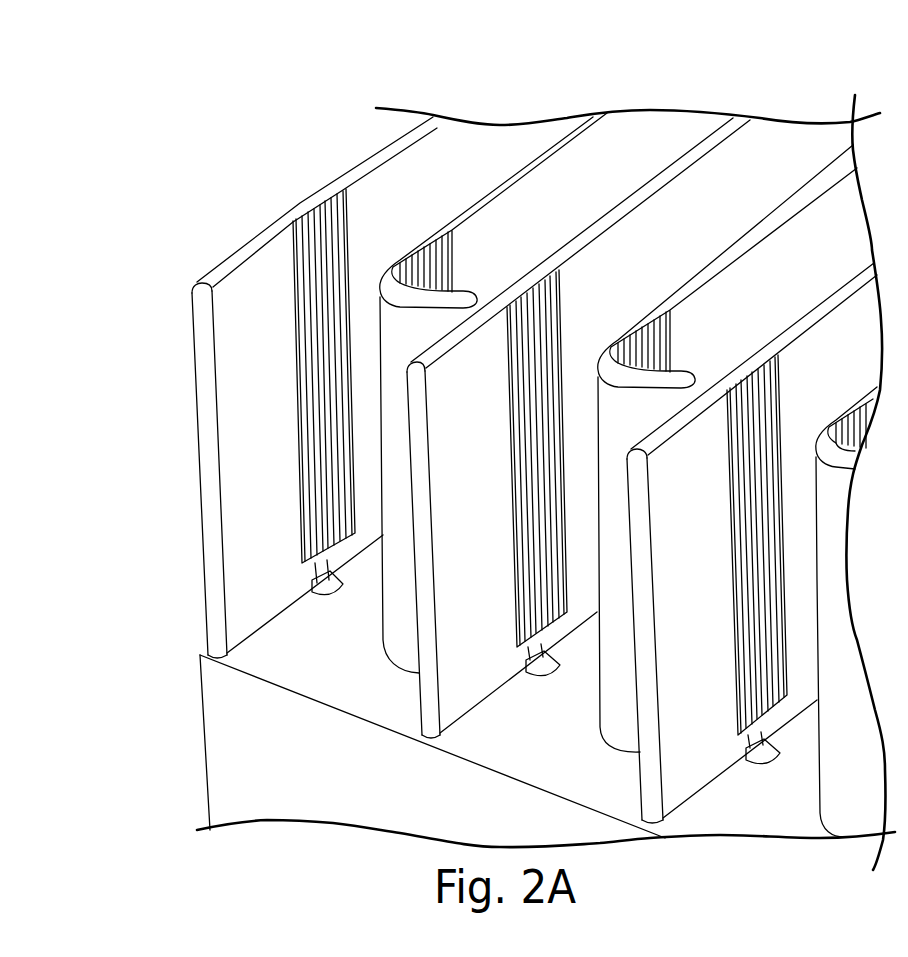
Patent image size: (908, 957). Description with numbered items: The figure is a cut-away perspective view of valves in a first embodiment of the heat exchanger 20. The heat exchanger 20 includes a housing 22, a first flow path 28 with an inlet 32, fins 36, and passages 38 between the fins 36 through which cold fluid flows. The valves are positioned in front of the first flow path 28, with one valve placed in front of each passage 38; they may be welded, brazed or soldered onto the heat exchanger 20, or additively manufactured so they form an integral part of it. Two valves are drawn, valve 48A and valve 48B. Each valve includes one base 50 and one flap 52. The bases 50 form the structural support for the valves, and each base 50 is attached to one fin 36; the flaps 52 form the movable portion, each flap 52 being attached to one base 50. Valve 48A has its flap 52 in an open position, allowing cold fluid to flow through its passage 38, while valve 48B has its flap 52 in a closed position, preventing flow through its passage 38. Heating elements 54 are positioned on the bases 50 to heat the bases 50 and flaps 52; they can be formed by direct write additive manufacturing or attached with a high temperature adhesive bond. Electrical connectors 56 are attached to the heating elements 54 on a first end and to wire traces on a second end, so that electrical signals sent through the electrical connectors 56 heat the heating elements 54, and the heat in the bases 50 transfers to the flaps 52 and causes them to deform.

The heat exchanger 20 is at (139, 166).
The housing 22 is at (237, 748).
The first flow path 28 is at (178, 469).
The inlet 32 is at (333, 712).
The fins 36 is at (400, 133).
The passages 38 is at (460, 157).
The valve 48A is at (242, 193).
The valve 48B is at (440, 220).
The bases 50 is at (323, 187).
The flaps 52 is at (225, 268).
The heating elements 54 is at (295, 277).
The electrical connectors 56 is at (313, 592).